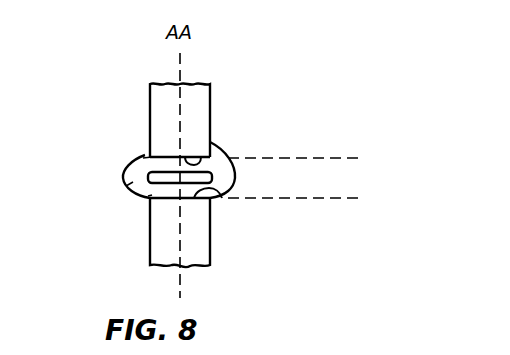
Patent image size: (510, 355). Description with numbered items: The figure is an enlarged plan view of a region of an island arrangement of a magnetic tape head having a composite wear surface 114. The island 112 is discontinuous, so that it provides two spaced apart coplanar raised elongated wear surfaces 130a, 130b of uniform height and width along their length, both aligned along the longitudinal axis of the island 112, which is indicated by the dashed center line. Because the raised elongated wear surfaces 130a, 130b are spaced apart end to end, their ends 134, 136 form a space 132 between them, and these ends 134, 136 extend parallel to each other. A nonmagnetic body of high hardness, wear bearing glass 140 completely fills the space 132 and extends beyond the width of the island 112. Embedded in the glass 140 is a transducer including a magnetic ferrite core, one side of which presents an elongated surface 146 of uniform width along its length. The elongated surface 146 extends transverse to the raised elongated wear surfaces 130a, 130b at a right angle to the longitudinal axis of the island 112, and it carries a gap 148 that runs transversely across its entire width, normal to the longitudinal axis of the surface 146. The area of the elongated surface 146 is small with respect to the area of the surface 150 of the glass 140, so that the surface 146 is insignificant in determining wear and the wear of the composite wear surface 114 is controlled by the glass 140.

The island 112 is at (228, 76).
The raised elongated wear surface 130a is at (210, 114).
The raised elongated wear surface 130b is at (202, 233).
The composite wear surface 114 is at (124, 170).
The body of glass 140 is at (143, 158).
The surface of the glass 150 is at (126, 186).
The elongated surface 146 is at (148, 196).
The end 134 is at (210, 142).
The gap 148 is at (229, 168).
The end 136 is at (222, 197).
The space 132 is at (368, 152).